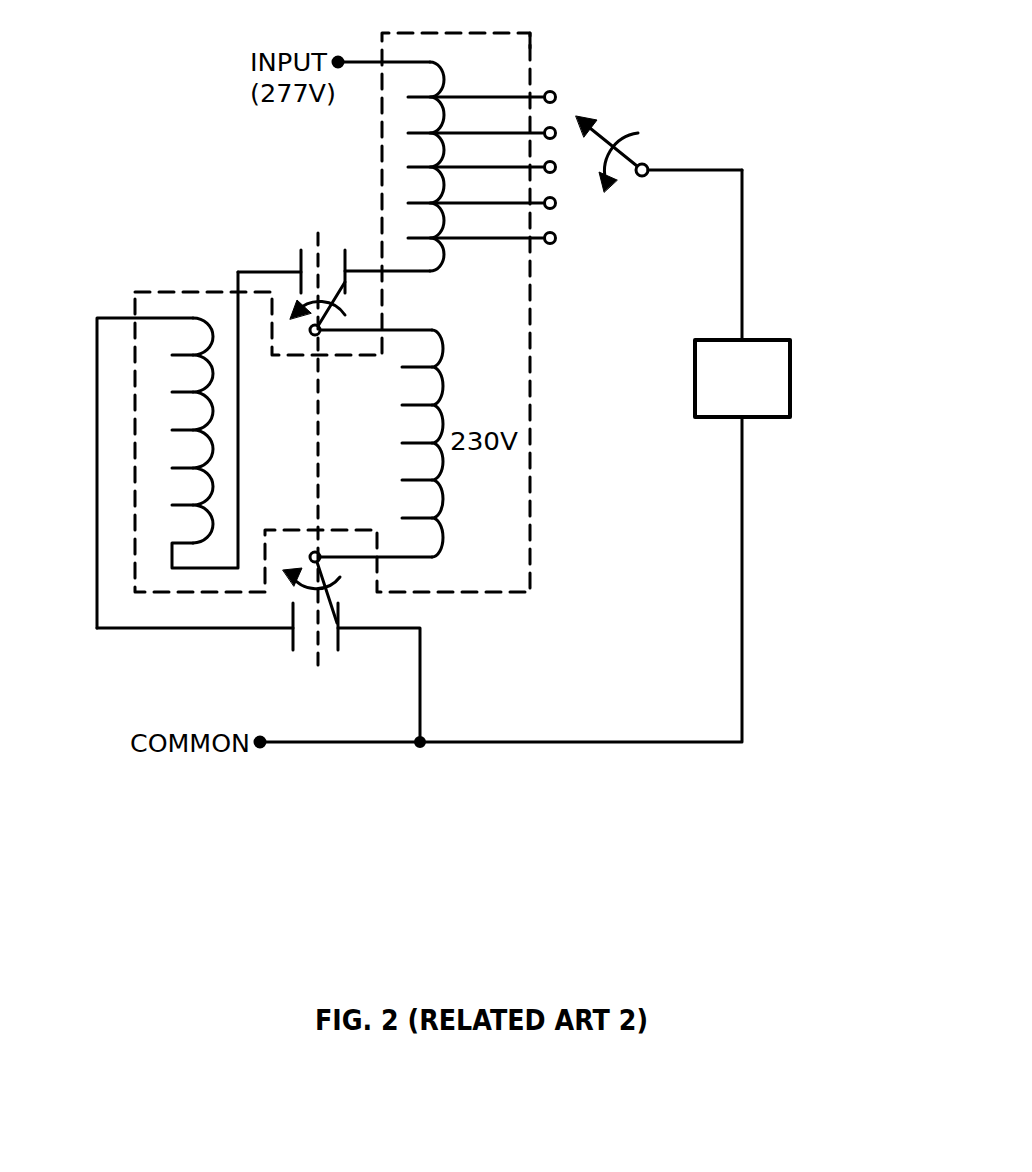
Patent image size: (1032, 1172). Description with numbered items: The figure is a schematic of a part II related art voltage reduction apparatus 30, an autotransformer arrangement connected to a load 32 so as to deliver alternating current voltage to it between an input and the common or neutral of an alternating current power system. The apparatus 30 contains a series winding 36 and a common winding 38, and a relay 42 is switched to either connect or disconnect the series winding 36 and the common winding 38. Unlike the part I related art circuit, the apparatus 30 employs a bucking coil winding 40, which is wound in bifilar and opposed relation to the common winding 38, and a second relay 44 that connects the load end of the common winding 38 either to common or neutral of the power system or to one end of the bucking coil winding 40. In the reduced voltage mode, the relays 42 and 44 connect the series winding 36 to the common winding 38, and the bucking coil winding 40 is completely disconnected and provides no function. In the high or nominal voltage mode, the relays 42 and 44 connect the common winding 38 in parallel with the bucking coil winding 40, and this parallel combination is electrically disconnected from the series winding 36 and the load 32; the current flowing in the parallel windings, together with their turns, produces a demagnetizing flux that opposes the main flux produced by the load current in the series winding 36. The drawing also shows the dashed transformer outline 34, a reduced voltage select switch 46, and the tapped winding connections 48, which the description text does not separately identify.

The voltage reduction apparatus 30 is at (796, 297).
The load 32 is at (790, 392).
The multi-tap autotransformer 34 is at (545, 50).
The series winding 36 is at (427, 125).
The common winding 38 is at (440, 551).
The bucking coil winding 40 is at (182, 393).
The relay 42 is at (297, 258).
The second relay 44 is at (298, 645).
The reduced voltage select switch 46 is at (741, 166).
The voltage taps 48 is at (411, 178).